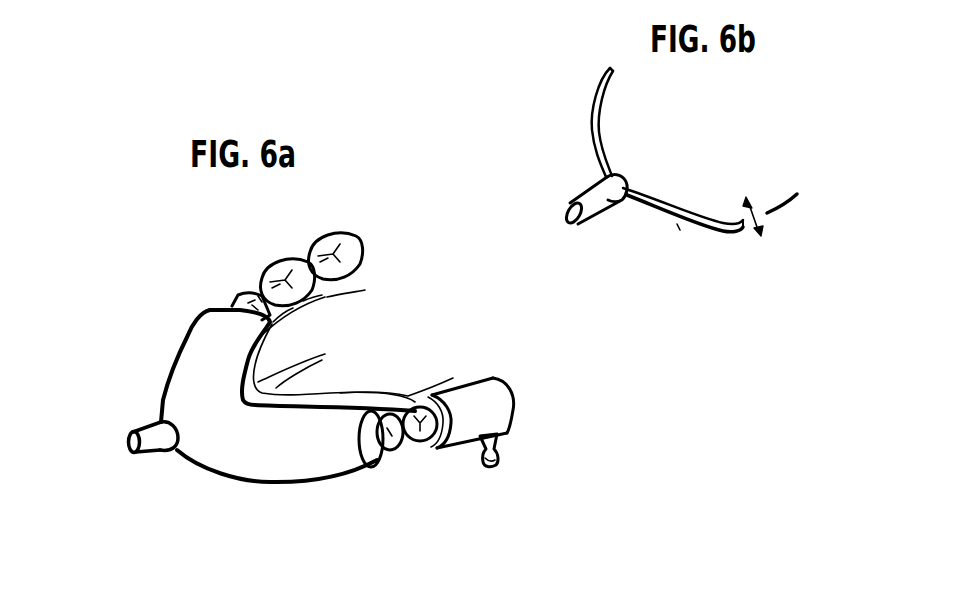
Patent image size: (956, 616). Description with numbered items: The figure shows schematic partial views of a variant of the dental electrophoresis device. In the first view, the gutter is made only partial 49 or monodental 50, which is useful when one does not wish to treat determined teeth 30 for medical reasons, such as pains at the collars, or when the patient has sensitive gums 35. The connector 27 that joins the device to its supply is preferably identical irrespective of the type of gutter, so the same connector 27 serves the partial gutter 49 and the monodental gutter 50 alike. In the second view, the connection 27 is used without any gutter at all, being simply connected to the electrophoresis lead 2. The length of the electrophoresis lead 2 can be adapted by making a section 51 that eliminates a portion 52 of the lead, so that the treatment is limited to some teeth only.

In FIG. 6b, the electrophoresis lead 2 is at (682, 225).
In FIG. 6a, the connector 27 is at (153, 435).
In FIG. 6b, the connector 27 is at (590, 203).
In FIG. 6a, the teeth 30 is at (406, 452).
In FIG. 6a, the gums 35 is at (408, 395).
In FIG. 6a, the partial gutter 49 is at (298, 463).
In FIG. 6a, the monodental gutter 50 is at (493, 410).
In FIG. 6b, the section 51 is at (761, 198).
In FIG. 6b, the portion 52 is at (783, 210).